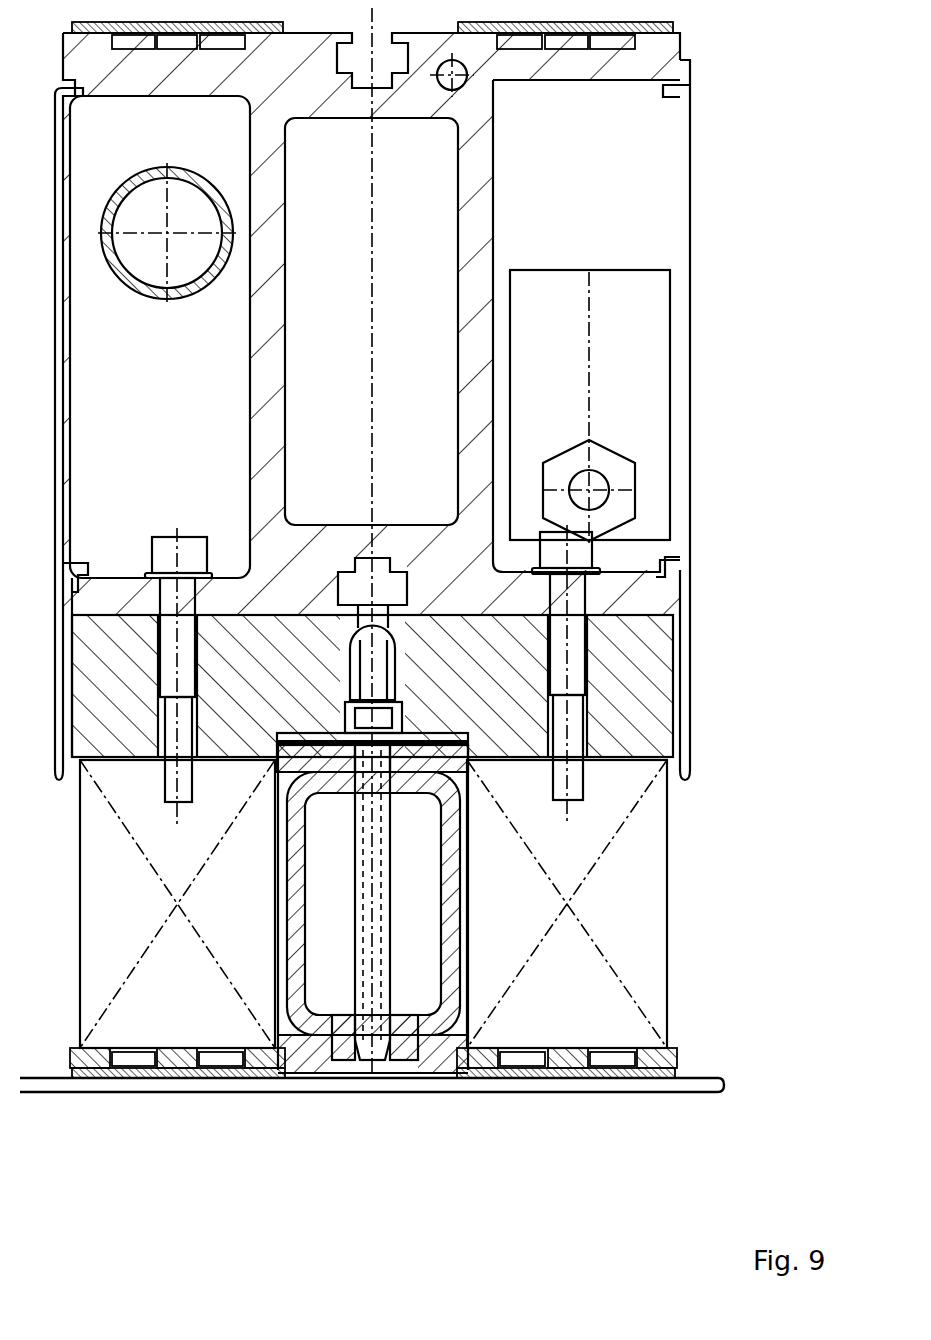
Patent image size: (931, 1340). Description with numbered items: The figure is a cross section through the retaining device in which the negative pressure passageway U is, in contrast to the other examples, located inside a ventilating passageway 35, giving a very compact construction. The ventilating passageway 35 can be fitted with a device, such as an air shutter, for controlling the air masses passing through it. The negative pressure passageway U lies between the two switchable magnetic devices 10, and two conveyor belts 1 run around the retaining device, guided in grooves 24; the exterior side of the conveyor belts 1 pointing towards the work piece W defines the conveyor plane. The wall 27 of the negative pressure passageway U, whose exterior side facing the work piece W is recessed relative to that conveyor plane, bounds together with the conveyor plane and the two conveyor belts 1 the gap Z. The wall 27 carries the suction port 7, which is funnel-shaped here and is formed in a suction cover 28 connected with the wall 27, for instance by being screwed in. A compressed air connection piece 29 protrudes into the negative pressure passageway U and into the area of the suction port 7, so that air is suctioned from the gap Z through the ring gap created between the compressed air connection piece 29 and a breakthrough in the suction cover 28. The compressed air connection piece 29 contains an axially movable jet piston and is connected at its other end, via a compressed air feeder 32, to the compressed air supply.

The conveyor belt 1 is at (185, 1080).
The suction port 7 is at (400, 1080).
The switchable magnetic device 10 is at (655, 906).
The groove 24 is at (640, 396).
The wall 27 is at (303, 1080).
The suction cover 28 is at (430, 1078).
The compressed air connection piece 29 is at (383, 948).
The compressed air feeder 32 is at (378, 673).
The ventilating passageway 35 is at (418, 978).
The negative pressure passageway U is at (460, 1080).
The work piece W is at (707, 1082).
The gap Z is at (377, 1080).